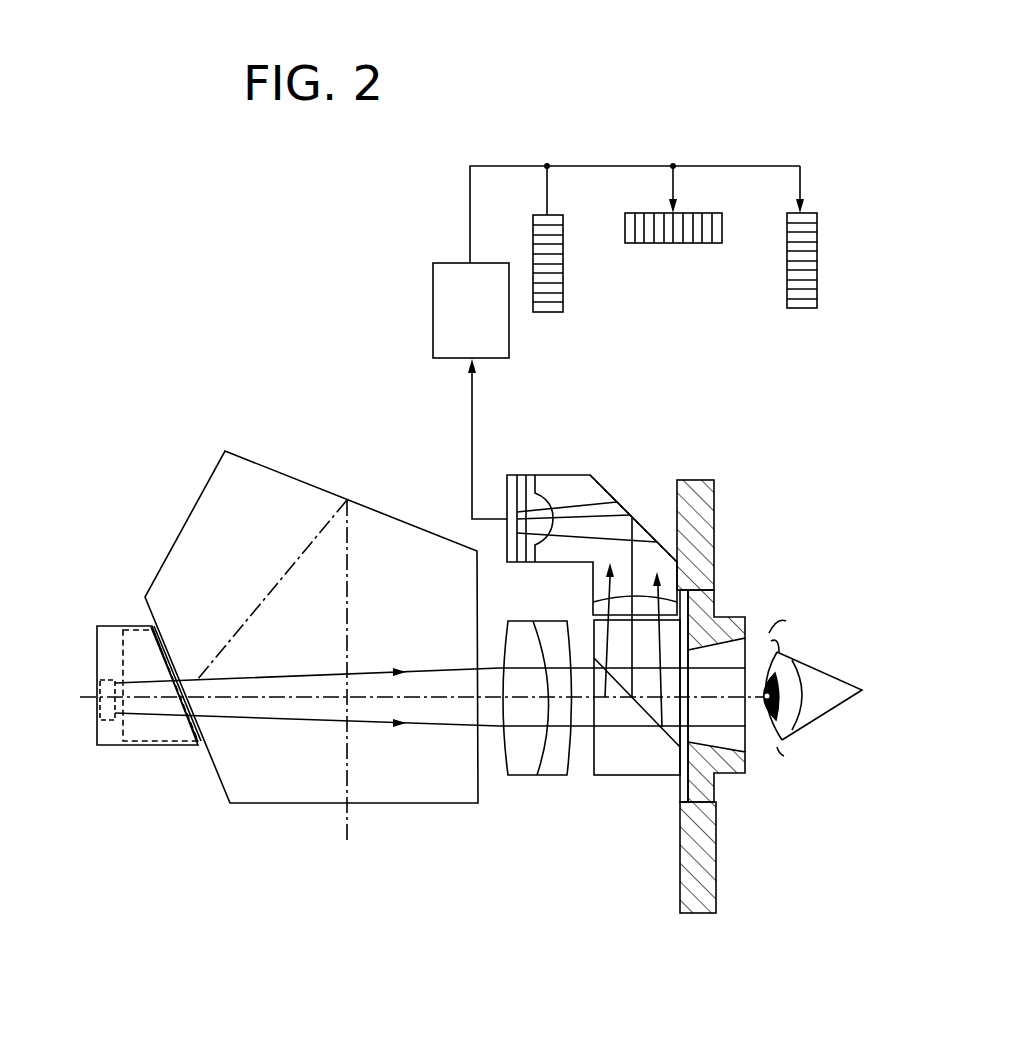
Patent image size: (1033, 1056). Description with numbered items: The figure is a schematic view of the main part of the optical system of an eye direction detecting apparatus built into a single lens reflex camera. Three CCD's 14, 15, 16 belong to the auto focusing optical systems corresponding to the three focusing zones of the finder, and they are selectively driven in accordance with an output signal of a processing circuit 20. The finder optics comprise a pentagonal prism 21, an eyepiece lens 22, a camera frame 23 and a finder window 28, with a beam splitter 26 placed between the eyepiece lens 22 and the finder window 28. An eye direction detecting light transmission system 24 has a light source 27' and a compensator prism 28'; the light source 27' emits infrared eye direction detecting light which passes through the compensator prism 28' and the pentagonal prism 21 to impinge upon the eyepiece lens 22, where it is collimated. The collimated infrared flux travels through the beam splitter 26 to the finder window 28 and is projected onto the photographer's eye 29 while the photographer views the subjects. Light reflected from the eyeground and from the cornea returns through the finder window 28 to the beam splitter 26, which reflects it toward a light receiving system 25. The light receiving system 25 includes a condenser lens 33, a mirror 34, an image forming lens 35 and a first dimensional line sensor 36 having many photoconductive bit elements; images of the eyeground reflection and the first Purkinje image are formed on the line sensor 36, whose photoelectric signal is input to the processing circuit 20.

The CCD 14 is at (547, 312).
The CCD 15 is at (673, 243).
The CCD 16 is at (800, 308).
The processing circuit 20 is at (433, 312).
The pentagonal prism 21 is at (302, 455).
The eyepiece lens 22 is at (533, 795).
The camera frame 23 is at (732, 521).
The eye direction detecting light transmission system 24 is at (150, 762).
The light receiving system 25 is at (616, 470).
The beam splitter 26 is at (630, 794).
The light source 27' is at (70, 698).
The finder window 28 is at (738, 708).
The compensator prism 28' is at (148, 644).
The eye 29 is at (824, 650).
The condenser lens 33 is at (620, 602).
The mirror 34 is at (640, 525).
The image forming lens 35 is at (556, 476).
The first dimensional line sensor 36 is at (508, 476).